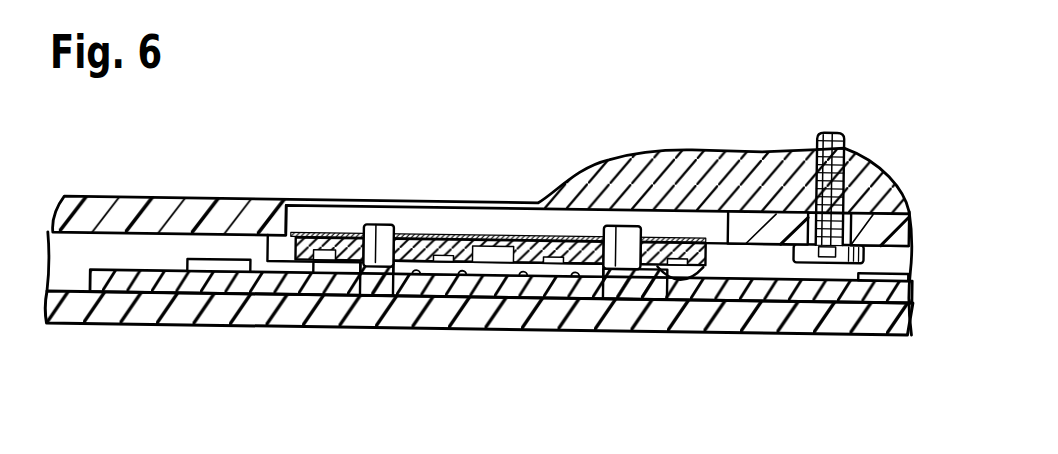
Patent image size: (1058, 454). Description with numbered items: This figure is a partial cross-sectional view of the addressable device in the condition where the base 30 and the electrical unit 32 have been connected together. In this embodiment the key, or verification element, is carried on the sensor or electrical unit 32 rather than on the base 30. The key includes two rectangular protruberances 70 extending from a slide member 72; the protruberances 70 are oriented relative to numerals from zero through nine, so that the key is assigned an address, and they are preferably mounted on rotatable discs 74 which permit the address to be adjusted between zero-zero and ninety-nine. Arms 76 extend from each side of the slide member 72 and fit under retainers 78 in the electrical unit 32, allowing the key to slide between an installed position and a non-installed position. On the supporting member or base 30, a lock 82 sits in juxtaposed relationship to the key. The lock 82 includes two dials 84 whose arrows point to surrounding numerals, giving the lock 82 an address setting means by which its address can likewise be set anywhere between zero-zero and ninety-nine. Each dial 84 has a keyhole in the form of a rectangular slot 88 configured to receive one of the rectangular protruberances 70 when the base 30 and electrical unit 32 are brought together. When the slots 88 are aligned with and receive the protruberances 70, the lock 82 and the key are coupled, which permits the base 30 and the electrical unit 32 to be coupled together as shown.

The base 30 is at (148, 198).
The electrical unit 32 is at (118, 323).
The rectangular protruberances 70 is at (388, 258).
The slide member 72 is at (523, 273).
The rotatable discs 74 is at (416, 273).
The arms 76 is at (108, 268).
The retainers 78 is at (240, 257).
The lock 82 is at (493, 266).
The dials 84 is at (340, 262).
The rectangular slot 88 is at (373, 238).